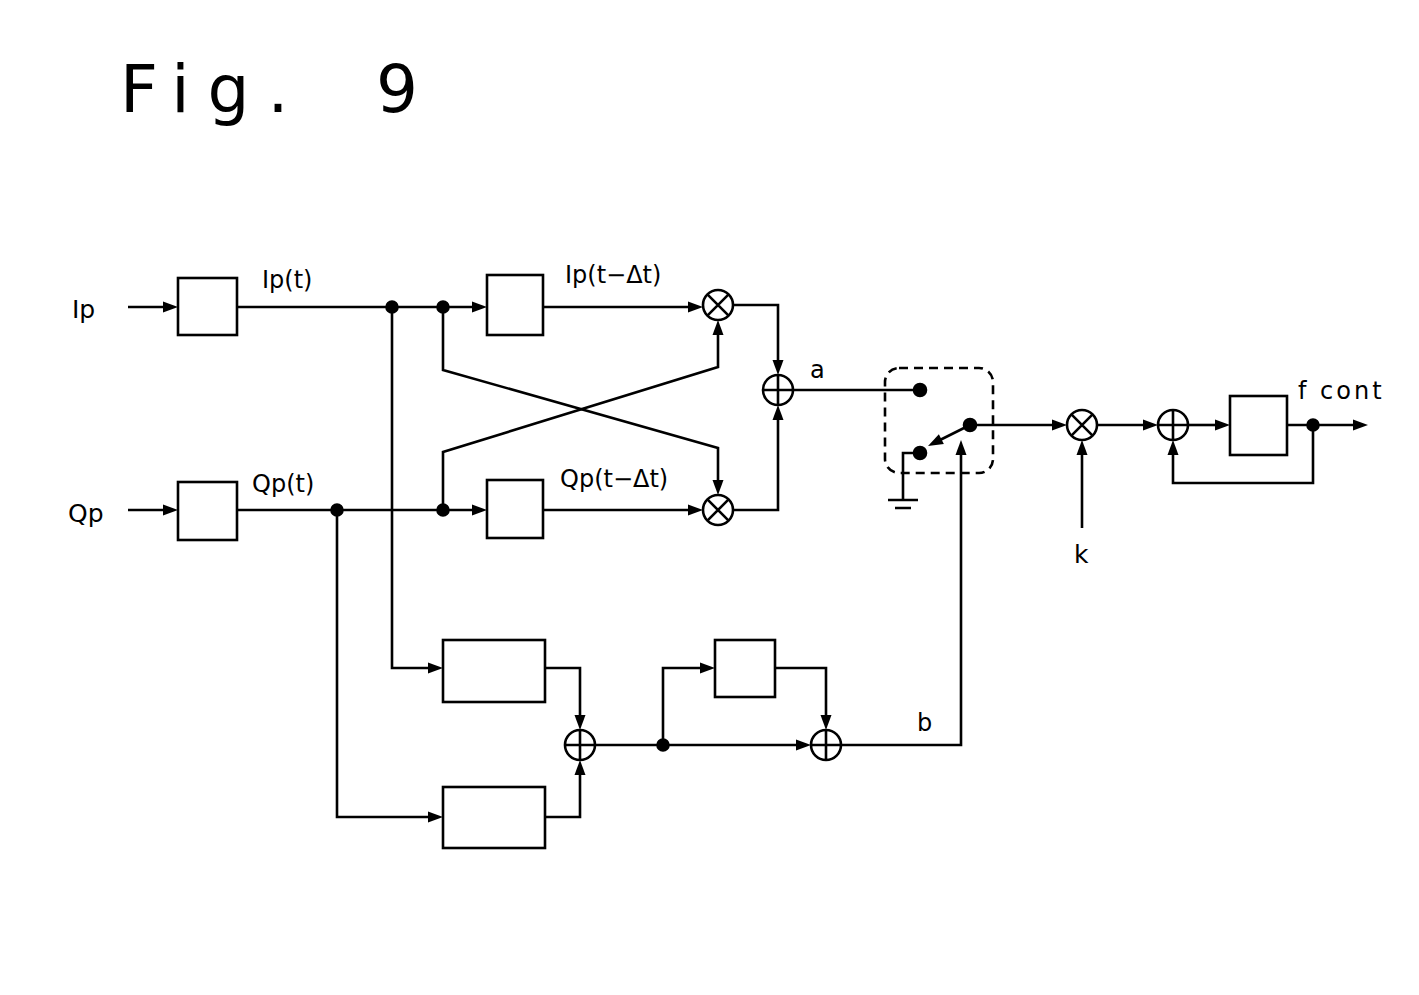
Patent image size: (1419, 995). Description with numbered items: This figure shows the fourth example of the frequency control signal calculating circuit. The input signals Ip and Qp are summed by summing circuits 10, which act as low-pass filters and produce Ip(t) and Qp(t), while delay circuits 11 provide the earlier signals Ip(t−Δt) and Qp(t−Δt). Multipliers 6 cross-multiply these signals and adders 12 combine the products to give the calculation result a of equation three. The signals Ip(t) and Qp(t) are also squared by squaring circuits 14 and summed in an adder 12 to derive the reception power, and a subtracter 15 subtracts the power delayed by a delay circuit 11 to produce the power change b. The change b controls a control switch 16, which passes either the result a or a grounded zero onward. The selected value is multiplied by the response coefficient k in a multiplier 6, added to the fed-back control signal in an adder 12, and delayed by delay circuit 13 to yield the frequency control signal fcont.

The summing circuit 10 is at (207, 278).
The delay circuit 11 is at (520, 275).
The multiplier 6 is at (1088, 410).
The adder 12 is at (790, 400).
The delay circuit 13 is at (1262, 396).
The squaring circuit 14 is at (462, 640).
The subtracter 15 is at (830, 760).
The control switch 16 is at (932, 358).